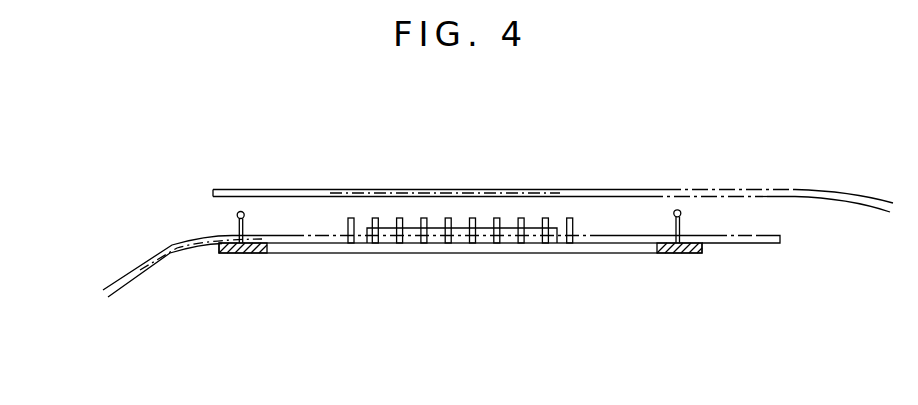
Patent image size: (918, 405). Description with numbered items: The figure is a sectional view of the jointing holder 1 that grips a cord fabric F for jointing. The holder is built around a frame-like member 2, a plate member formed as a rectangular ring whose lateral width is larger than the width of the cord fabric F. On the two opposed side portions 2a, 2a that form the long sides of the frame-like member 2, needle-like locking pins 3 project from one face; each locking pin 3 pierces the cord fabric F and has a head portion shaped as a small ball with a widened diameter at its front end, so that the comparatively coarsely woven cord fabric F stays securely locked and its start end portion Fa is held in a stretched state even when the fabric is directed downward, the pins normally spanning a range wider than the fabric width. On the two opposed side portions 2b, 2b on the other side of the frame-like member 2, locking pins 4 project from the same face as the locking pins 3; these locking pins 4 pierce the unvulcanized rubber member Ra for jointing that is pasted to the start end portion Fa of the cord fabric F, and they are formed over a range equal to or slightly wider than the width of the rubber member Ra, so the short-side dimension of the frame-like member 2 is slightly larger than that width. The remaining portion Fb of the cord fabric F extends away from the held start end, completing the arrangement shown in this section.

The jointing holder 1 is at (798, 137).
The frame-like member 2 is at (441, 311).
The side portion 2a is at (250, 254).
The side portion 2b is at (433, 254).
The locking pin 3 is at (237, 214).
The locking pin 4 is at (375, 221).
The cord fabric F is at (158, 251).
The start end portion Fa is at (607, 233).
The second film portion Fb is at (308, 193).
The unvulcanized rubber member for jointing Ra is at (503, 227).